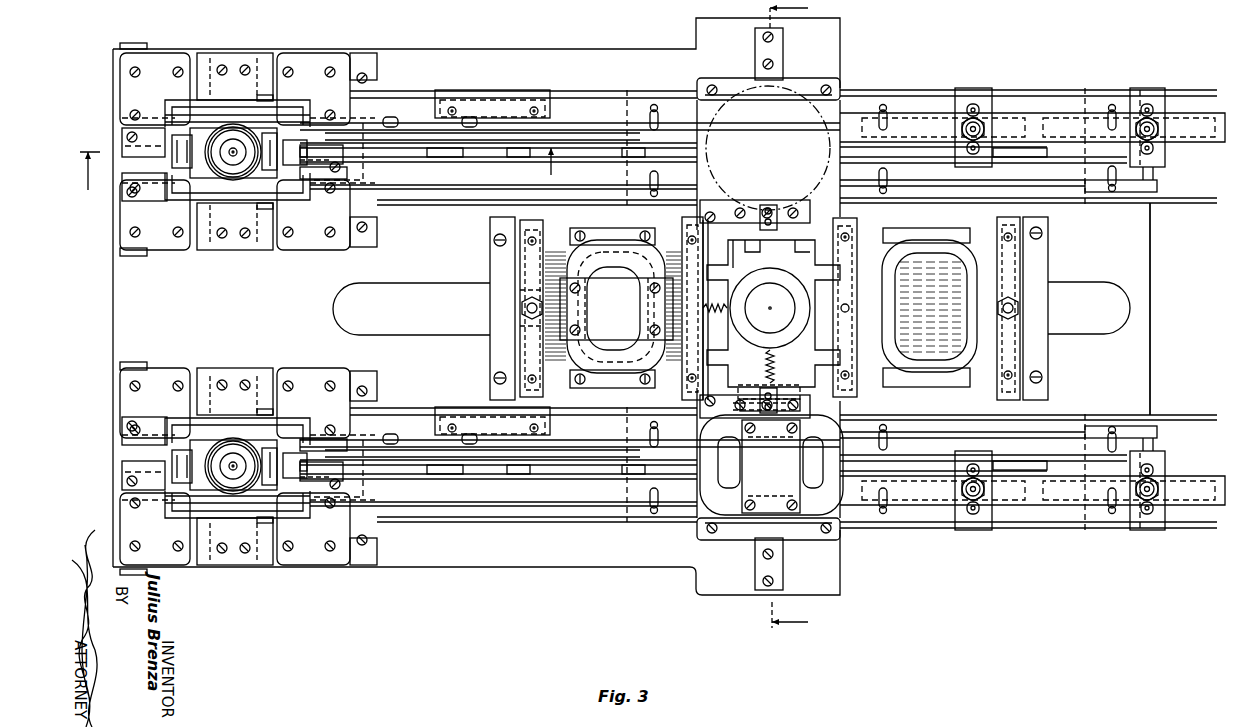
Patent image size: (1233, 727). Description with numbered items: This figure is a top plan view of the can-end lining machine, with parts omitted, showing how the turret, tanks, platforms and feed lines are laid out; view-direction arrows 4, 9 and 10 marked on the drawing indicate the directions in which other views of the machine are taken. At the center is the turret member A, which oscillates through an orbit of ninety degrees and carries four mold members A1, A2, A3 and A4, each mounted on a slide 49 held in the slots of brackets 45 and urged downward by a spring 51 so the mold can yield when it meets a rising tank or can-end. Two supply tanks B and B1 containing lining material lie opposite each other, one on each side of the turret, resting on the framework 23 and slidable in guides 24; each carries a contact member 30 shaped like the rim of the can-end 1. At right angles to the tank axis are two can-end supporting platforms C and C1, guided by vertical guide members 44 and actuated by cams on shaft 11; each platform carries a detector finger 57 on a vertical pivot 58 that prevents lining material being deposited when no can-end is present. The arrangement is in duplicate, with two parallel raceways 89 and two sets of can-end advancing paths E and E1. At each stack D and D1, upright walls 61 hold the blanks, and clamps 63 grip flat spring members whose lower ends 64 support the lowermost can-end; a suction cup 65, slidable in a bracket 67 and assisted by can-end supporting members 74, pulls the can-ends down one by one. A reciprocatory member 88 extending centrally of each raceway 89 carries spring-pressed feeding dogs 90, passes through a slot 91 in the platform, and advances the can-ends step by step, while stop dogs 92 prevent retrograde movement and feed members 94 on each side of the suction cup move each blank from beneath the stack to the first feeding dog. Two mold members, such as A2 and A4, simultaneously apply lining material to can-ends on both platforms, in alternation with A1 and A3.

The can-end 1 is at (833, 110).
The armature pivot disc 4 is at (770, 308).
The section line 9 is at (772, 318).
The slot in base plate 10 is at (483, 307).
The shaft 11 is at (319, 169).
The framework 23 is at (1117, 309).
The guide 24 is at (492, 352).
The contact member 30 is at (594, 335).
The vertical guide member 44 is at (780, 80).
The upper bracket 45 is at (706, 290).
The slide 49 is at (803, 415).
The spring 51 is at (785, 368).
The detector finger 57 is at (742, 212).
The vertical pivot 58 is at (709, 216).
The upright wall 61 is at (290, 100).
The clamp 63 is at (263, 236).
The lower end of spring member 64 is at (217, 199).
The suction cup 65 is at (247, 170).
The bracket 67 is at (205, 170).
The can-end supporting member 74 is at (285, 135).
The reciprocatory member 88 is at (553, 140).
The raceway 89 is at (587, 130).
The feeding dog 90 is at (493, 153).
The slot 91 is at (808, 130).
The stop dog 92 is at (377, 152).
The feed member 94 is at (121, 117).
The turret member A is at (768, 262).
The mold member A1 is at (613, 308).
The mold member A2 is at (819, 497).
The mold member A3 is at (843, 270).
The mold member A4 is at (747, 248).
The supply tank B is at (547, 263).
The supply tank B1 is at (990, 274).
The can-end supporting platform C is at (812, 82).
The can-end supporting platform C1 is at (815, 540).
The can-end stack D is at (254, 20).
The can-end stack D1 is at (237, 351).
The can-end advancing path E is at (757, 40).
The can-end advancing path E1 is at (744, 581).